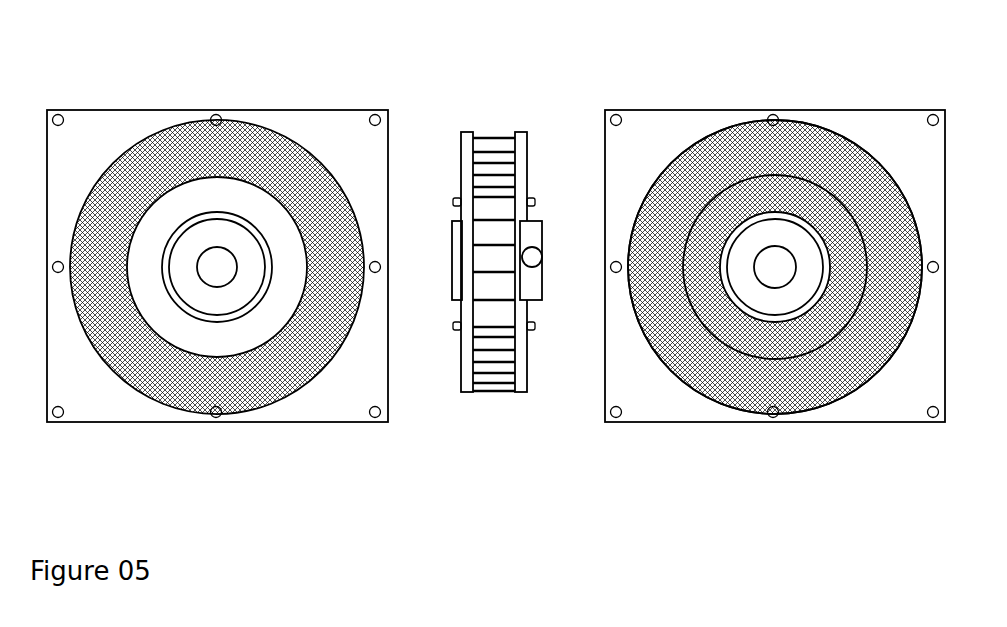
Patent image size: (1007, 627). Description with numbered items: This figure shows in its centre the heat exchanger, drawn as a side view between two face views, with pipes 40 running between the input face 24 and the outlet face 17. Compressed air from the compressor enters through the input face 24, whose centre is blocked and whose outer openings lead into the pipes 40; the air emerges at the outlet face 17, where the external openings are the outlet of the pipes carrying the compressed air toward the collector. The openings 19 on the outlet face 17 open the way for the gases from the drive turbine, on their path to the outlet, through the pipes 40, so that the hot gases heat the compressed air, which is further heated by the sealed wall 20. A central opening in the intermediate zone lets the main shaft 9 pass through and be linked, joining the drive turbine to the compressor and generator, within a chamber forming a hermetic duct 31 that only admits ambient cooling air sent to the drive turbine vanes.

The main shaft 9 is at (728, 140).
The outlet face 17 is at (467, 131).
The openings 19 is at (459, 306).
The sealed wall 20 is at (253, 200).
The input face 24 is at (222, 108).
The duct 31 is at (838, 142).
The pipes 40 is at (492, 137).